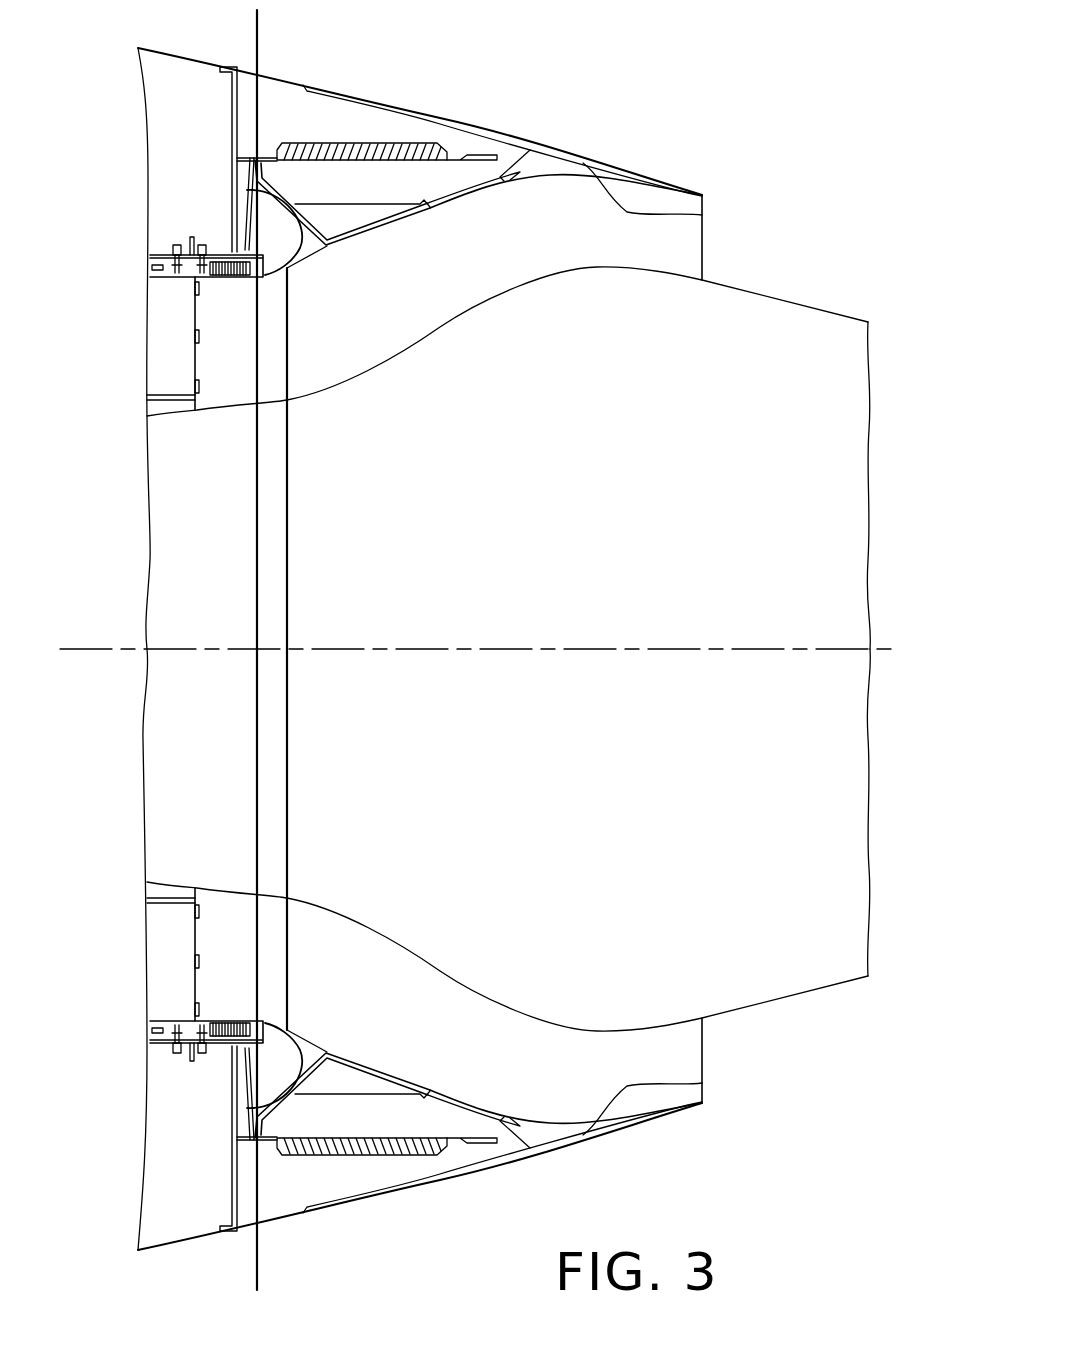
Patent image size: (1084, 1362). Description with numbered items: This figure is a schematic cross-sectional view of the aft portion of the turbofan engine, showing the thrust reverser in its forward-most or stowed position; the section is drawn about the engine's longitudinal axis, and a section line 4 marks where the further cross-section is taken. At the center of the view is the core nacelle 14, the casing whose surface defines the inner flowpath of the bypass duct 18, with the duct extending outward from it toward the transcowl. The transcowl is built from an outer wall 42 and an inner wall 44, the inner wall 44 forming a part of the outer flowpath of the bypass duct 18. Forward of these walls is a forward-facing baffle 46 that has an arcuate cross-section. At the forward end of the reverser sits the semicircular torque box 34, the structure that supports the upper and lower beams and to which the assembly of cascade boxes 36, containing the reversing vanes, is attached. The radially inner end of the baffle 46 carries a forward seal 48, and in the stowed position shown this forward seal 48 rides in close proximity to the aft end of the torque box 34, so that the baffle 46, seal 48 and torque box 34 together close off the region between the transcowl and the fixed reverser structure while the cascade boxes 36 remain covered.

The section line 4- 4 is at (245, 22).
The core nacelle 14 is at (802, 302).
The bypass duct 18 is at (530, 200).
The torque box 34 is at (262, 225).
The cascade boxes 36 is at (299, 122).
The outer wall 42 is at (358, 92).
The inner wall 44 is at (642, 212).
The forward-facing baffle 46 is at (333, 237).
The forward seal 48 is at (263, 277).